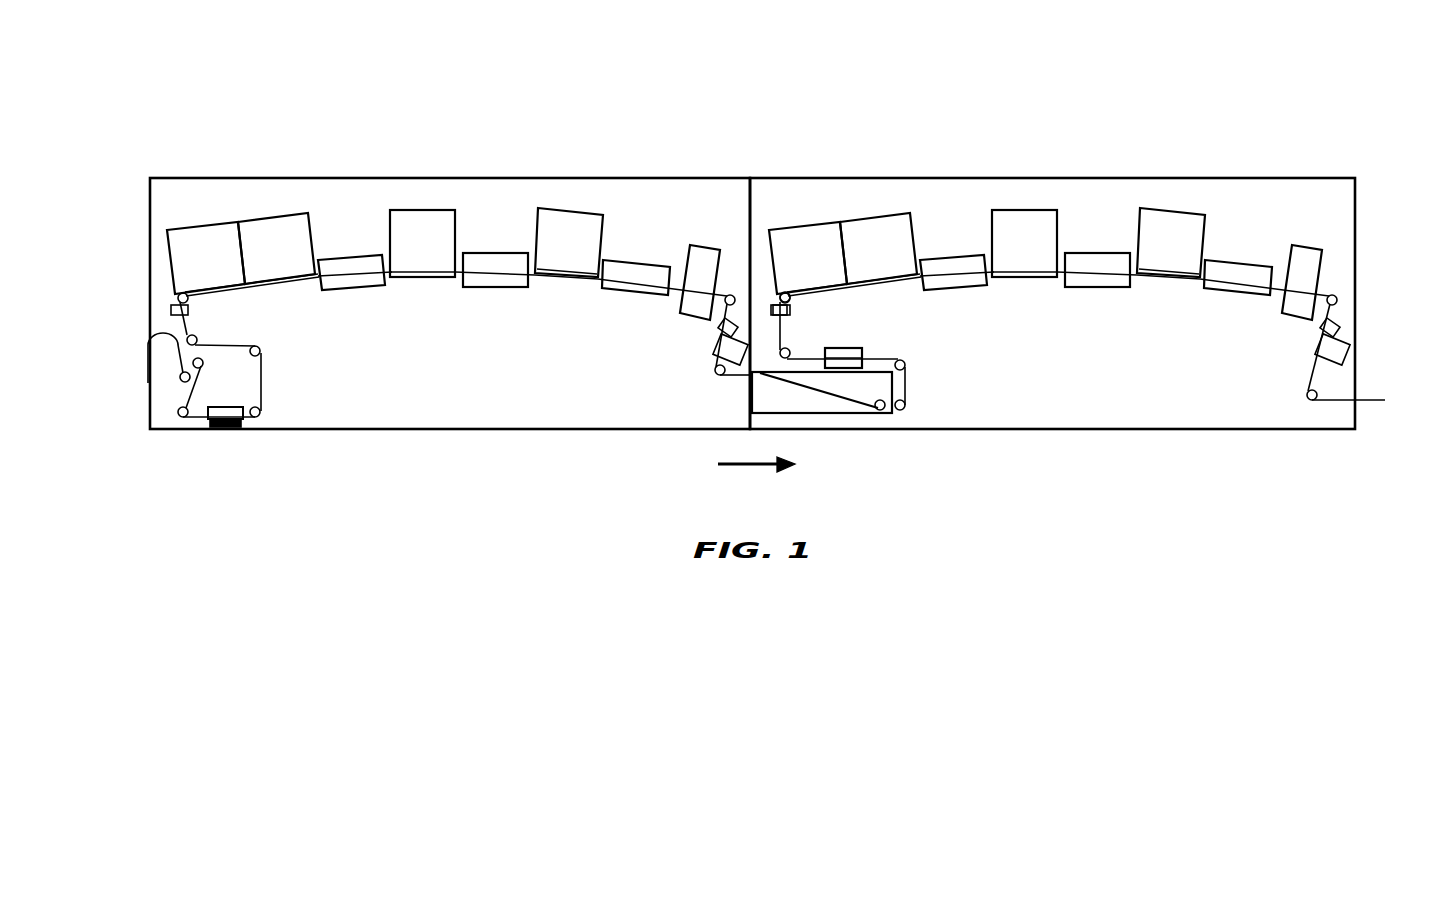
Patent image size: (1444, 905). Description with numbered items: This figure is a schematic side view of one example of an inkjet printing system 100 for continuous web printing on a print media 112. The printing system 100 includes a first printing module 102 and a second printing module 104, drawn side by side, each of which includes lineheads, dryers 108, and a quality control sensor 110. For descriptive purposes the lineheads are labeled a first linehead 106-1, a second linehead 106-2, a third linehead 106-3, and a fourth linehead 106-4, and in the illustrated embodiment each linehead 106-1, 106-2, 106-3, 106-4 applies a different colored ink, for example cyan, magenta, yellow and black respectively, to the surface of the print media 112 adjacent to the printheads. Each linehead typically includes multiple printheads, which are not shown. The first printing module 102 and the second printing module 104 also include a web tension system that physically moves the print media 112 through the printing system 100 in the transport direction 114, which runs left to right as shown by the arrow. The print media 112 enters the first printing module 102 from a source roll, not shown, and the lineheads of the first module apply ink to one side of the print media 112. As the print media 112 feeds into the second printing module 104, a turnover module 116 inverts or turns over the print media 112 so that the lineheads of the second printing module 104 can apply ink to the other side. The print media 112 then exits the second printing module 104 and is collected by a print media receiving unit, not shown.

The printing system 100 is at (808, 60).
The first printing module 102 is at (668, 177).
The second printing module 104 is at (1268, 177).
The first linehead 106-1 is at (195, 227).
The second linehead 106-2 is at (290, 213).
The third linehead 106-3 is at (423, 210).
The fourth linehead 106-4 is at (573, 210).
The dryers 108 is at (366, 290).
The quality control sensor 110 is at (712, 237).
The print media 112 is at (138, 392).
The transport direction arrow 114 is at (750, 466).
The turnover module 116 is at (907, 387).